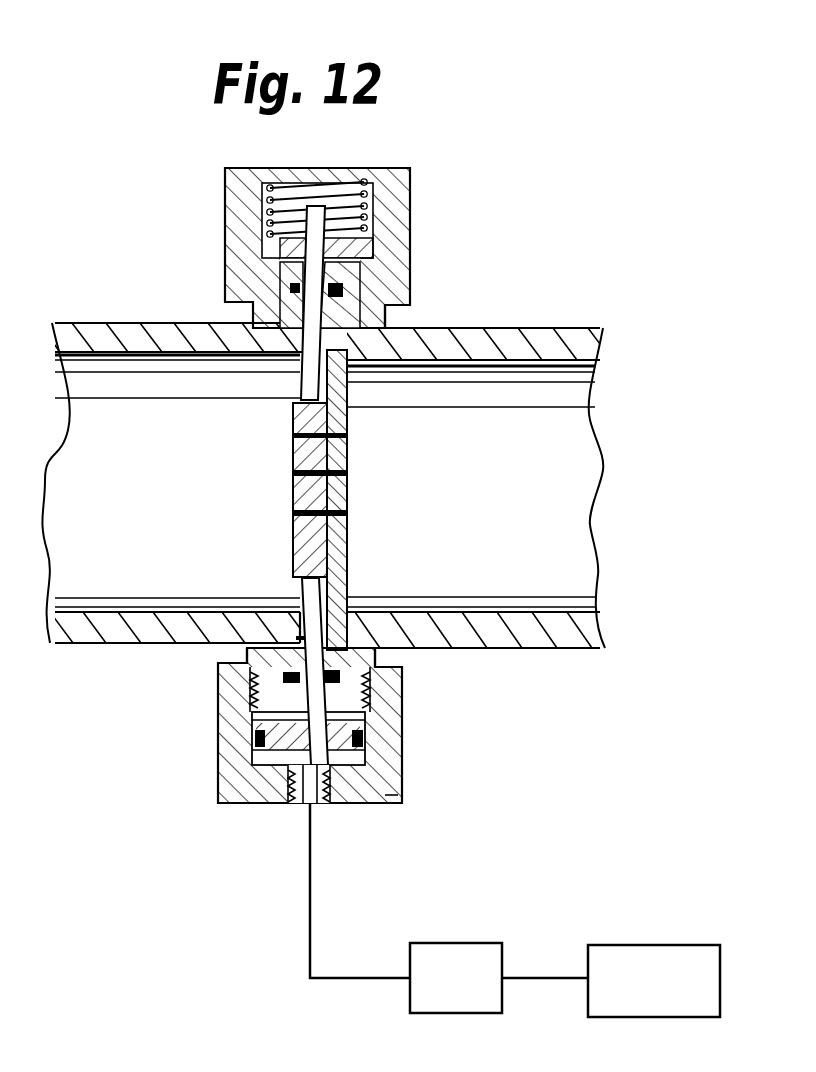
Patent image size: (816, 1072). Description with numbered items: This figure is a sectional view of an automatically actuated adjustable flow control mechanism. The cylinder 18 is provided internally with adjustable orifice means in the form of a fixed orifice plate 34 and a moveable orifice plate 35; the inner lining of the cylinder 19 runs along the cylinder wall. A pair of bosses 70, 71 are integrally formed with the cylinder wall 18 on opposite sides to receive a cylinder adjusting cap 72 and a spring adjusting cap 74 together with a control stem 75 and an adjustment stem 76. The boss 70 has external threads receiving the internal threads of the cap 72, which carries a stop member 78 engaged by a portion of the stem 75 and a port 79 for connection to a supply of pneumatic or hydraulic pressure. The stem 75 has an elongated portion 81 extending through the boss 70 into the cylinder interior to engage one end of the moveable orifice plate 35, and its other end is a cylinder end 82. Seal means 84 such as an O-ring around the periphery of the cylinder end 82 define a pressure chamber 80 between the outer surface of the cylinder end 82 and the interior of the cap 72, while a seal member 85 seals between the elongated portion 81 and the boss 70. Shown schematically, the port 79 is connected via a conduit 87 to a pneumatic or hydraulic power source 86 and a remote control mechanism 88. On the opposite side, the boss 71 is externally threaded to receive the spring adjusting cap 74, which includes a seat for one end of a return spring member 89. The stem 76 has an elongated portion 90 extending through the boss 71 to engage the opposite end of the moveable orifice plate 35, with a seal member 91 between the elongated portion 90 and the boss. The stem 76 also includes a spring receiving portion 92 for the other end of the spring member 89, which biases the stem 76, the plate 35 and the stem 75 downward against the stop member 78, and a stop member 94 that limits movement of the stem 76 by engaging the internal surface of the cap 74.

The cylinder 18 is at (566, 328).
The pipe liner 19 is at (565, 372).
The fixed orifice plate 34 is at (350, 422).
The moveable orifice plate 35 is at (293, 547).
The boss 70 is at (373, 655).
The boss 71 is at (388, 315).
The cylinder adjusting cap 72 is at (407, 792).
The spring adjusting cap 74 is at (410, 250).
The control stem 75 is at (305, 638).
The adjustment stem 76 is at (300, 268).
The stop member 78 is at (225, 795).
The port 79 is at (303, 803).
The pressure chamber 80 is at (345, 805).
The elongated portion 81 is at (300, 587).
The cylinder end 82 is at (360, 745).
The seal means 84 is at (258, 740).
The seal member 85 is at (345, 683).
The pneumatic or hydraulic power source 86 is at (453, 960).
The conduit 87 is at (312, 937).
The remote control mechanism 88 is at (638, 960).
The return spring member 89 is at (342, 212).
The elongated portion 90 is at (306, 380).
The seal member 91 is at (292, 295).
The spring receiving portion 92 is at (302, 262).
The stop member 94 is at (332, 168).